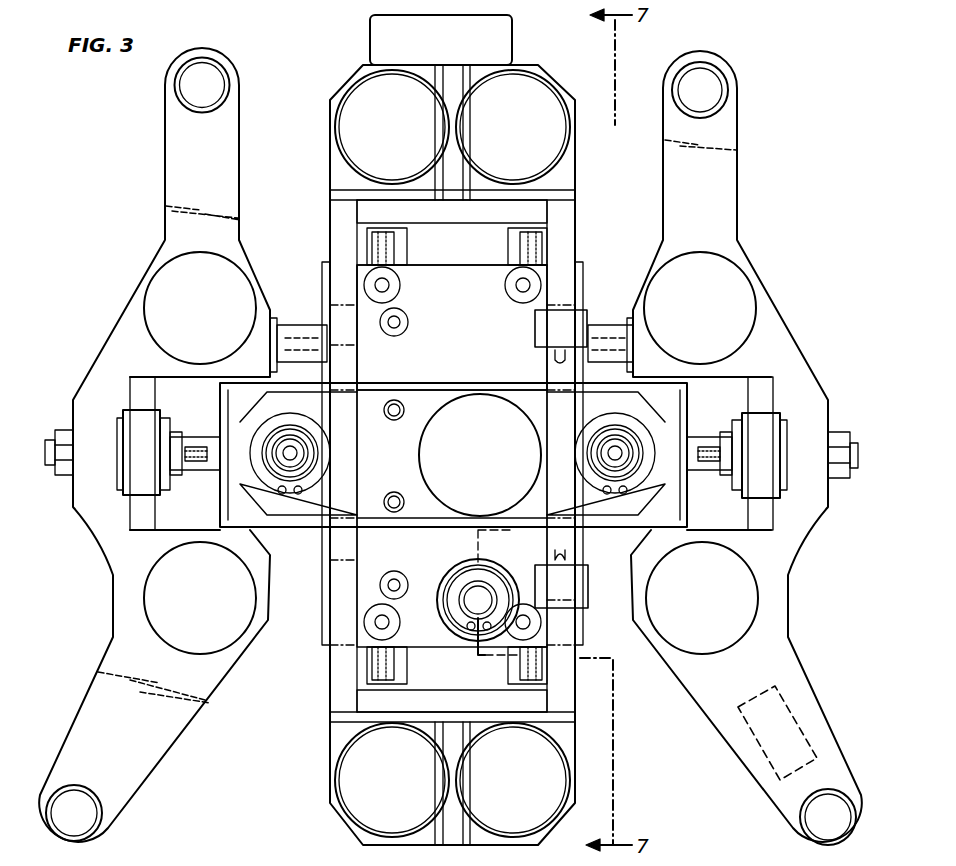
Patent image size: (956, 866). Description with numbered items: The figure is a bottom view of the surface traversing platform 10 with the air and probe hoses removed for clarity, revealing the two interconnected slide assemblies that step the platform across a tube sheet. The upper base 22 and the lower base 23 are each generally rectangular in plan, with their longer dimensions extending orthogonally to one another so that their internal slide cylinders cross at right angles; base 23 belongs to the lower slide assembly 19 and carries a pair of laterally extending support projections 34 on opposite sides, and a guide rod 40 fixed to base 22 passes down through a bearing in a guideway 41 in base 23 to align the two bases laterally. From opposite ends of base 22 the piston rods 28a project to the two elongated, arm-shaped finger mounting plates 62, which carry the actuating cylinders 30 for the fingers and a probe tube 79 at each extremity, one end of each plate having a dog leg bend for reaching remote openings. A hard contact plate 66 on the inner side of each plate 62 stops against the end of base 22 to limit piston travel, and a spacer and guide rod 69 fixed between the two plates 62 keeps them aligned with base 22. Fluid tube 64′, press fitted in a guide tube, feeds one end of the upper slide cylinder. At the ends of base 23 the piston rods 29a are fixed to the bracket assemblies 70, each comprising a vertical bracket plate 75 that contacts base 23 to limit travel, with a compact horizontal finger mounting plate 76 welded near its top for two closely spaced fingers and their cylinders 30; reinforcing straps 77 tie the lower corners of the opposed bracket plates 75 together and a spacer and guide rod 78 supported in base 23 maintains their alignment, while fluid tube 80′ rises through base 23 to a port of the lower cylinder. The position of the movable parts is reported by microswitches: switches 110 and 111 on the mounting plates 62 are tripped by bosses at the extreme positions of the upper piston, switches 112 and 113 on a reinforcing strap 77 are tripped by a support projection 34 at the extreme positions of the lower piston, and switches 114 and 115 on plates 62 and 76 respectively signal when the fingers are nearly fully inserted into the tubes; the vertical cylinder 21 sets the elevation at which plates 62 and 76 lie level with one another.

The platform 10 is at (112, 128).
The slide assembly 19 is at (476, 371).
The vertical cylinder 21 is at (491, 462).
The base 22 is at (222, 513).
The base 23 is at (490, 334).
The piston rod 28a is at (707, 438).
The piston rod 29a is at (403, 245).
The actuating cylinder 30 is at (404, 138).
The support projection 34 is at (262, 410).
The guide rod 40 is at (490, 611).
The guideway 41 is at (474, 580).
The finger mounting plate 62 is at (125, 330).
The fluid tube 64′ is at (616, 468).
The contact plate 66 is at (137, 395).
The spacer and guide rod 69 is at (302, 325).
The bracket assembly 70 is at (468, 212).
The bracket plate 75 is at (375, 212).
The finger mounting plate 76 is at (362, 68).
The reinforcing strap 77 is at (340, 248).
The spacer and guide rod 78 is at (520, 250).
The probe tube 79 is at (205, 58).
The fluid tube 80′ is at (408, 322).
The microswitch 110 is at (770, 464).
The microswitch 111 is at (152, 462).
The microswitch 112 is at (587, 310).
The microswitch 113 is at (608, 590).
The microswitch 114 is at (795, 708).
The microswitch 115 is at (460, 48).